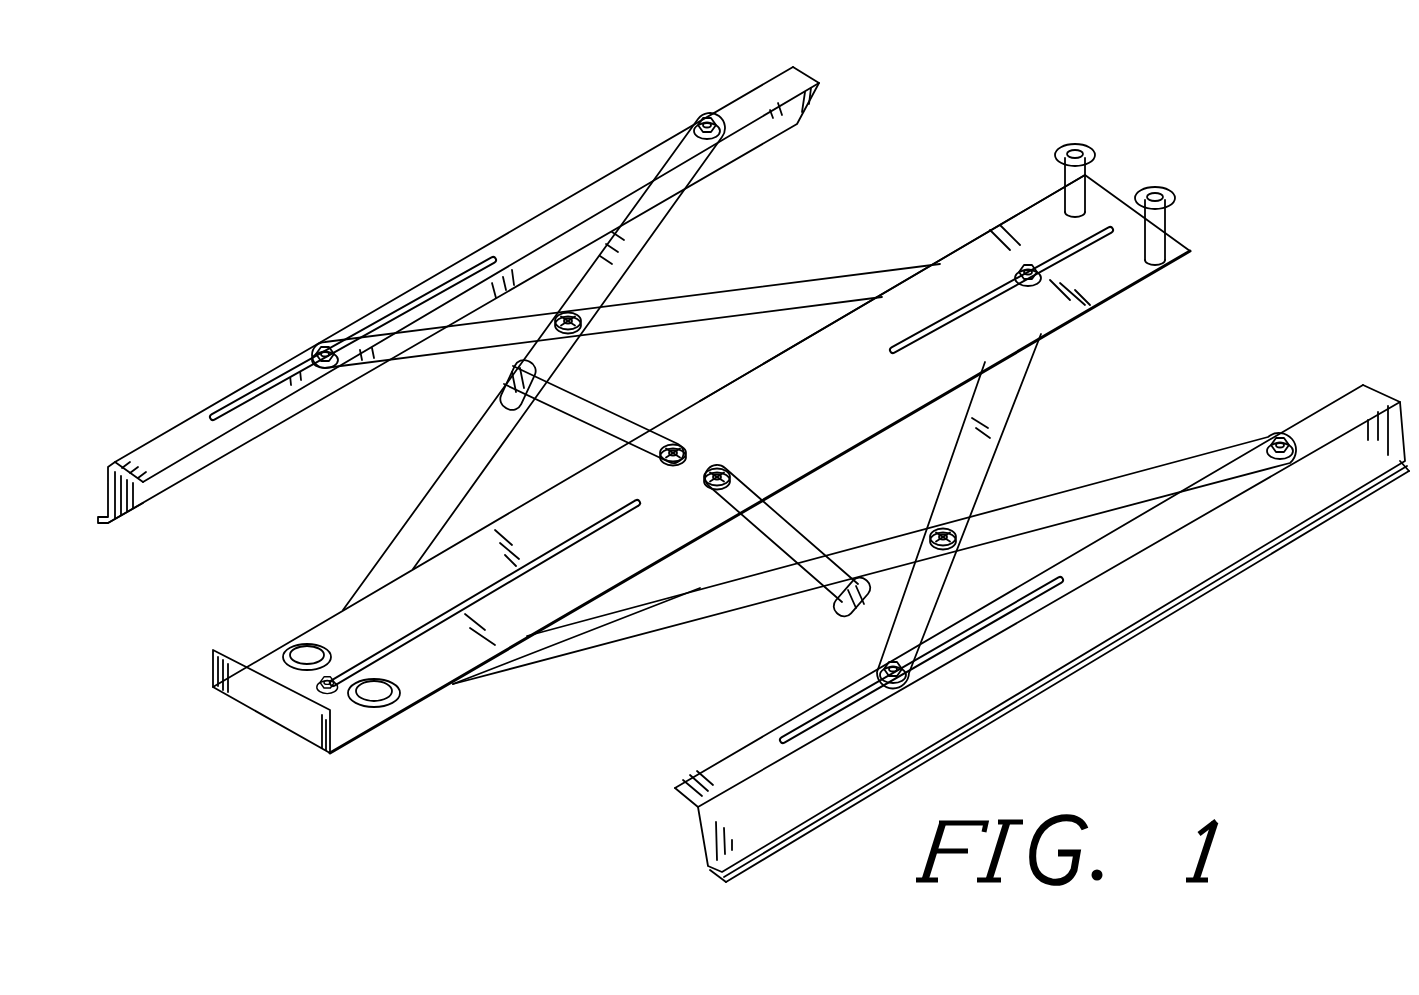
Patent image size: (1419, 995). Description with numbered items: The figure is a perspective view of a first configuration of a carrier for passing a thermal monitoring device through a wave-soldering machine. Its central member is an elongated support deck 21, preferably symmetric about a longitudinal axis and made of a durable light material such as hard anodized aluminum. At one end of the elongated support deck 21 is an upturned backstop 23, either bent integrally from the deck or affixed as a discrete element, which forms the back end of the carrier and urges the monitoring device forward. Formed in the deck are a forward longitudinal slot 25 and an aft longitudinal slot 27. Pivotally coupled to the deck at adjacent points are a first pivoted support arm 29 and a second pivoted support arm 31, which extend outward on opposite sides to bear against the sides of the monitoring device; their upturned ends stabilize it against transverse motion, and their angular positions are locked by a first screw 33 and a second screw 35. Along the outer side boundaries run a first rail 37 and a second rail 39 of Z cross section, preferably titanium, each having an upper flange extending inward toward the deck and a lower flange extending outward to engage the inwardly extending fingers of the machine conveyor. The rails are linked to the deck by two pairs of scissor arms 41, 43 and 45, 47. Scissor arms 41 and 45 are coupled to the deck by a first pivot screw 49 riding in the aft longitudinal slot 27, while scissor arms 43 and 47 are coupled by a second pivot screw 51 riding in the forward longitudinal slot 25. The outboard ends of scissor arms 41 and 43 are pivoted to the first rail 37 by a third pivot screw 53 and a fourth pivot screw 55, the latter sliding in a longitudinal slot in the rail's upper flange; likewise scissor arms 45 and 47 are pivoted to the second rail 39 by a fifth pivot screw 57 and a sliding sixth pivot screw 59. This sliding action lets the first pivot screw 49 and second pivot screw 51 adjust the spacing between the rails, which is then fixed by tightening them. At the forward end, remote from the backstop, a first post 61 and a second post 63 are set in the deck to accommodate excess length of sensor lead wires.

The elongated support deck 21 is at (430, 700).
The upturned backstop 23 is at (258, 705).
The forward longitudinal slot 25 is at (947, 257).
The aft longitudinal slot 27 is at (340, 627).
The first pivoted support arm 29 is at (626, 428).
The second pivoted support arm 31 is at (770, 540).
The first screw 33 is at (683, 440).
The second screw 35 is at (733, 481).
The first rail 37 is at (512, 232).
The second rail 39 is at (1215, 545).
The scissor arm 41 is at (415, 528).
The scissor arm 43 is at (765, 285).
The scissor arm 45 is at (556, 640).
The scissor arm 47 is at (1000, 412).
The first pivot screw 49 is at (331, 694).
The second pivot screw 51 is at (1028, 268).
The third pivot screw 53 is at (708, 118).
The fourth pivot screw 55 is at (325, 348).
The fifth pivot screw 57 is at (1275, 440).
The sixth pivot screw 59 is at (880, 672).
The first post 61 is at (1096, 160).
The second post 63 is at (1176, 203).